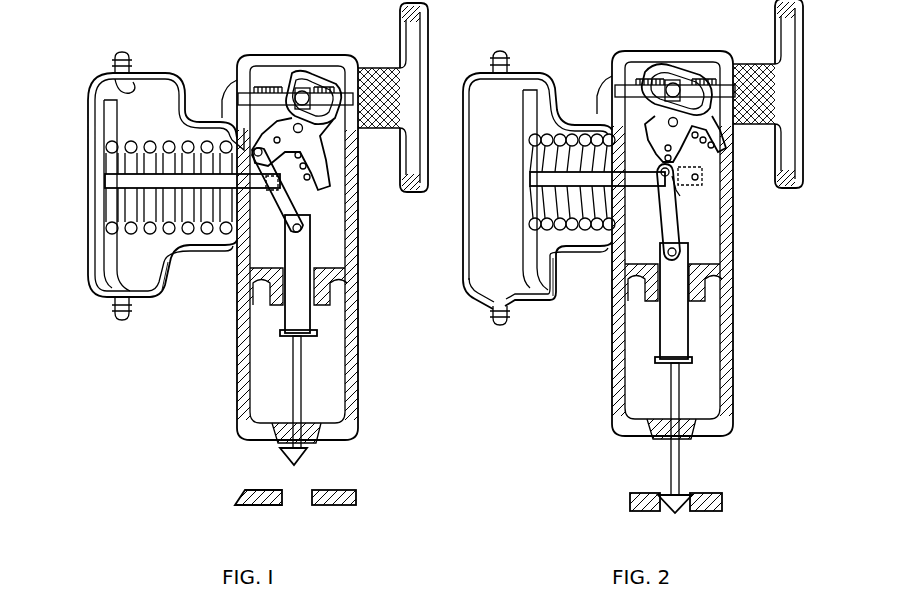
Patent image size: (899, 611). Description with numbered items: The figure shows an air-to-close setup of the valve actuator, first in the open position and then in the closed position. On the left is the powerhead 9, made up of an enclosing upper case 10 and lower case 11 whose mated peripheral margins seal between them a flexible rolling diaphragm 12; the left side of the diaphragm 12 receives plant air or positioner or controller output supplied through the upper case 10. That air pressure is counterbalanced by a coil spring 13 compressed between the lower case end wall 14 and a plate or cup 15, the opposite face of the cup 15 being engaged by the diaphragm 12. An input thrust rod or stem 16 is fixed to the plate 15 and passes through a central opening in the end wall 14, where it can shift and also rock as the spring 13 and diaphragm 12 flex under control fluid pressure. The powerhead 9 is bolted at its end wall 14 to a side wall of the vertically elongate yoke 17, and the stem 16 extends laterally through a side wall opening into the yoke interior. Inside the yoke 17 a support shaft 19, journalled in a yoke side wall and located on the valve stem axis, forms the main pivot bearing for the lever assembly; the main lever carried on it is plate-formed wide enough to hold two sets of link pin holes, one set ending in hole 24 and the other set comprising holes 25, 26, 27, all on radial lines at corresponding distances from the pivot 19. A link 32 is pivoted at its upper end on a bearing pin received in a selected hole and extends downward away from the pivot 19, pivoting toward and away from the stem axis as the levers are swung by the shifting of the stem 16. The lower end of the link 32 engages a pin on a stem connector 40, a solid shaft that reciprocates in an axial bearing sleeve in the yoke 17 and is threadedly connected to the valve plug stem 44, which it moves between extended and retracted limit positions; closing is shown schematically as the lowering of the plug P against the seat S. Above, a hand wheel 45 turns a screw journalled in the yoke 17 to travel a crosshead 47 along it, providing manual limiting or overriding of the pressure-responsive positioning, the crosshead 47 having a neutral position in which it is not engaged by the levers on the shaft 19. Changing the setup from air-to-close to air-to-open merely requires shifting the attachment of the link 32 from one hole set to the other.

In FIG. 1, the powerhead 9 is at (167, 320).
In FIG. 2, the powerhead 9 is at (550, 318).
In FIG. 1, the upper case 10 is at (86, 283).
In FIG. 2, the upper case 10 is at (465, 290).
In FIG. 1, the lower case 11 is at (175, 268).
In FIG. 2, the lower case 11 is at (558, 274).
In FIG. 1, the rolling diaphragm 12 is at (136, 95).
In FIG. 1, the coil spring 13 is at (156, 140).
In FIG. 2, the coil spring 13 is at (532, 235).
In FIG. 1, the lower case end wall 14 is at (240, 135).
In FIG. 1, the plate or cup 15 is at (104, 122).
In FIG. 2, the plate or cup 15 is at (535, 121).
In FIG. 1, the input thrust rod or stem 16 is at (106, 187).
In FIG. 2, the input thrust rod or stem 16 is at (535, 181).
In FIG. 1, the yoke 17 is at (282, 57).
In FIG. 2, the yoke 17 is at (630, 50).
In FIG. 1, the support shaft 19 is at (303, 131).
In FIG. 2, the support shaft 19 is at (664, 123).
In FIG. 1, the link pin hole 24 is at (236, 118).
In FIG. 2, the link pin hole 24 is at (680, 196).
In FIG. 2, the link pin hole 25 is at (716, 142).
In FIG. 2, the link pin hole 26 is at (705, 162).
In FIG. 2, the link pin hole 27 is at (702, 168).
In FIG. 1, the link 32 is at (290, 204).
In FIG. 2, the link 32 is at (681, 229).
In FIG. 1, the stem connector 40 is at (311, 240).
In FIG. 2, the stem connector 40 is at (664, 334).
In FIG. 1, the valve plug stem 44 is at (301, 378).
In FIG. 2, the valve plug stem 44 is at (679, 389).
In FIG. 1, the hand wheel 45 is at (426, 52).
In FIG. 2, the hand wheel 45 is at (804, 164).
In FIG. 1, the crosshead 47 is at (303, 90).
In FIG. 2, the crosshead 47 is at (674, 82).
In FIG. 1, the seat S is at (240, 493).
In FIG. 2, the seat S is at (632, 496).
In FIG. 1, the plug P is at (288, 455).
In FIG. 2, the plug P is at (672, 508).